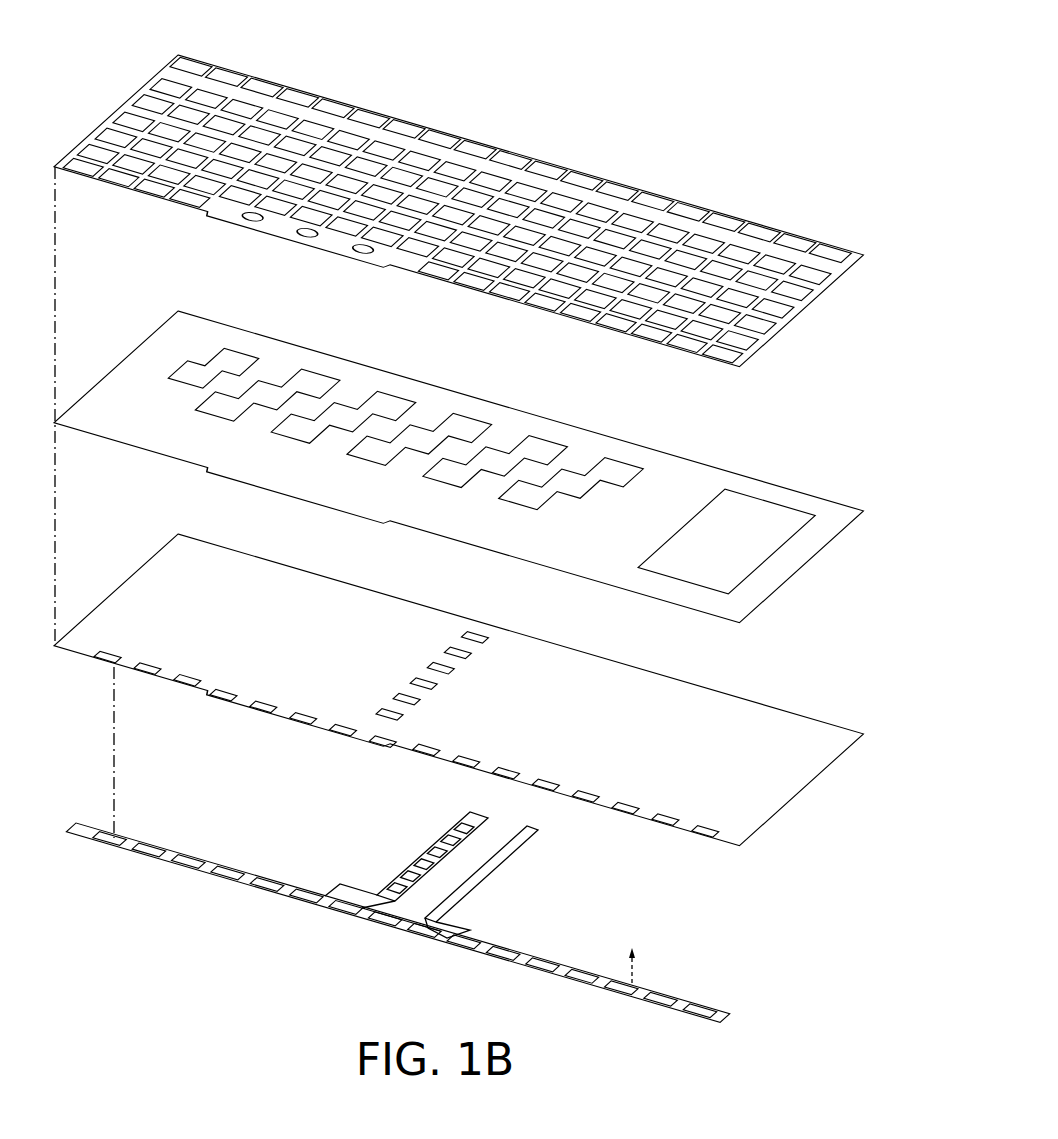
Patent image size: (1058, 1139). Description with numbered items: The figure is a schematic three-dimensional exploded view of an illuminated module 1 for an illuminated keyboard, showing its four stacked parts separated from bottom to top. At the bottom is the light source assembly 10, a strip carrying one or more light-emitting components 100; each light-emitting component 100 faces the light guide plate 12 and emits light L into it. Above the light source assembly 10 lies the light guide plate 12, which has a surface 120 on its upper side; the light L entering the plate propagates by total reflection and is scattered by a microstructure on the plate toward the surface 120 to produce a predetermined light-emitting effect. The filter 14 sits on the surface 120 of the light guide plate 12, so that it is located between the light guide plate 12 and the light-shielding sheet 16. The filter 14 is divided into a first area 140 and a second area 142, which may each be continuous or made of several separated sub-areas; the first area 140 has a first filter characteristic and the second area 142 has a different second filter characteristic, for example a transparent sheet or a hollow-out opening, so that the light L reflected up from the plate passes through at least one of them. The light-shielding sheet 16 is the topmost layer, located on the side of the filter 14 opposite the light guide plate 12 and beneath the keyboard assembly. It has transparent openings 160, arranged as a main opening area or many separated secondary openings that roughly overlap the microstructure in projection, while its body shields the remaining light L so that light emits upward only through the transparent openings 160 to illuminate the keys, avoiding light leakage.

The illuminated module 1 is at (868, 88).
The light source assembly 10 is at (692, 1000).
The light-emitting component 100 is at (625, 997).
The light guide plate 12 is at (833, 727).
The surface 120 is at (773, 737).
The filter 14 is at (833, 502).
The first area 140 is at (690, 490).
The second area 142 is at (620, 467).
The light-shielding sheet 16 is at (730, 218).
The transparent opening 160 is at (810, 238).
The light L is at (631, 952).